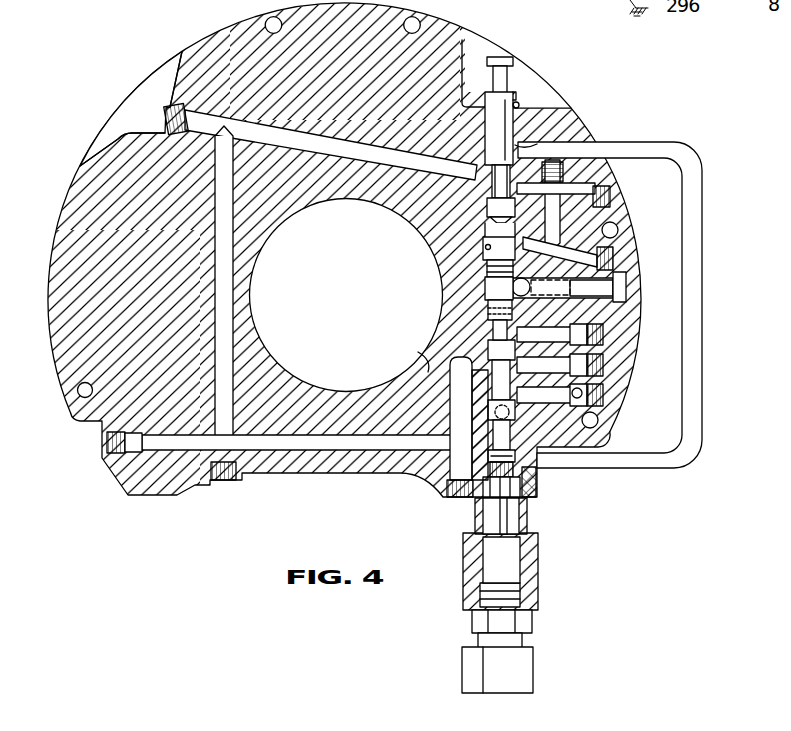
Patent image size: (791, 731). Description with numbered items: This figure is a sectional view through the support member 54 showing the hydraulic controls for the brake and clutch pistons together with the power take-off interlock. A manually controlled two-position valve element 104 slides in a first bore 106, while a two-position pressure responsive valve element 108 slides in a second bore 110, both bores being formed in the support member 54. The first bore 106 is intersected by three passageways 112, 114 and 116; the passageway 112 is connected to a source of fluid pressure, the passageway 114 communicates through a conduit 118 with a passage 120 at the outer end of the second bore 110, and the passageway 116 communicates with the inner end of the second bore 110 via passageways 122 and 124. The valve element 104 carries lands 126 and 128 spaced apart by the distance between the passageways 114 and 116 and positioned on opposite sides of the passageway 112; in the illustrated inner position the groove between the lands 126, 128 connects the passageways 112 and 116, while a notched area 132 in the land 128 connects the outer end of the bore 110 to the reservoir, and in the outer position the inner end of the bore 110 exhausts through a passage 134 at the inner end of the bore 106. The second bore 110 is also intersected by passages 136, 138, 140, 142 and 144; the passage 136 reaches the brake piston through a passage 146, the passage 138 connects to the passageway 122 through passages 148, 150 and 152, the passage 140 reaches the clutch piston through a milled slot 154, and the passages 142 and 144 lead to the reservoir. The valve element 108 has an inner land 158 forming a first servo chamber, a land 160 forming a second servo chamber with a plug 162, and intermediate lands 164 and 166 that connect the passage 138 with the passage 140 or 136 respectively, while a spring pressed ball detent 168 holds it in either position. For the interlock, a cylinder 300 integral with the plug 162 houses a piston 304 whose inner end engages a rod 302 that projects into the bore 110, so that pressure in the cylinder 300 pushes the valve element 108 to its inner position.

The support member 54 is at (222, 32).
The manually controlled two-position valve element 104 is at (512, 82).
The first bore 106 is at (520, 100).
The two-position pressure responsive valve element 108 is at (498, 332).
The second bore 110 is at (485, 247).
The passageway 112 is at (167, 118).
The passageway 114 is at (536, 143).
The passageway 116 is at (598, 192).
The conduit 118 is at (682, 152).
The passage 120 is at (521, 480).
The passageway 122 is at (550, 217).
The passageway 124 is at (615, 258).
The land 126 is at (490, 207).
The land 128 is at (495, 158).
The notched area 132 is at (500, 126).
The passage 134 is at (490, 221).
The passage 136 is at (600, 387).
The passage 138 is at (600, 360).
The passage 140 is at (600, 333).
The passage 142 is at (512, 413).
The passage 144 is at (490, 312).
The passage 146 is at (583, 394).
The passage 148 is at (236, 283).
The passage 150 is at (338, 456).
The passage 152 is at (430, 477).
The milled slot 154 is at (426, 360).
The land 158 is at (495, 270).
The land 160 is at (515, 455).
The plug 162 is at (533, 495).
The intermediate land 164 is at (475, 412).
The intermediate land 166 is at (458, 362).
The spring pressed ball detent 168 is at (530, 302).
The cylinder 300 is at (535, 547).
The rod 302 is at (500, 520).
The piston 304 is at (510, 565).